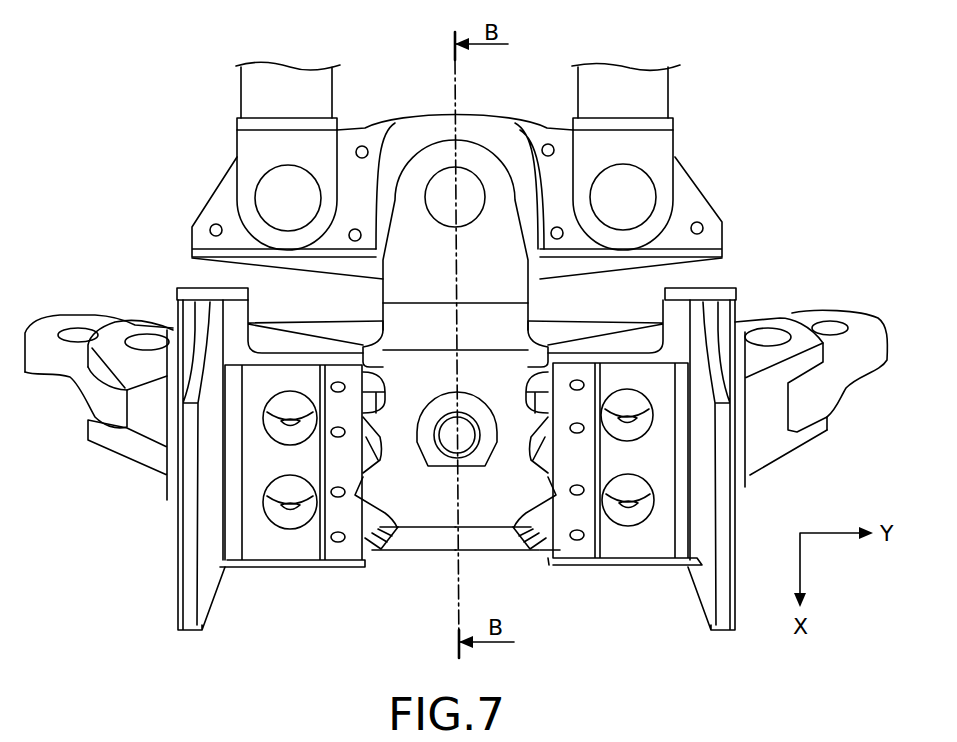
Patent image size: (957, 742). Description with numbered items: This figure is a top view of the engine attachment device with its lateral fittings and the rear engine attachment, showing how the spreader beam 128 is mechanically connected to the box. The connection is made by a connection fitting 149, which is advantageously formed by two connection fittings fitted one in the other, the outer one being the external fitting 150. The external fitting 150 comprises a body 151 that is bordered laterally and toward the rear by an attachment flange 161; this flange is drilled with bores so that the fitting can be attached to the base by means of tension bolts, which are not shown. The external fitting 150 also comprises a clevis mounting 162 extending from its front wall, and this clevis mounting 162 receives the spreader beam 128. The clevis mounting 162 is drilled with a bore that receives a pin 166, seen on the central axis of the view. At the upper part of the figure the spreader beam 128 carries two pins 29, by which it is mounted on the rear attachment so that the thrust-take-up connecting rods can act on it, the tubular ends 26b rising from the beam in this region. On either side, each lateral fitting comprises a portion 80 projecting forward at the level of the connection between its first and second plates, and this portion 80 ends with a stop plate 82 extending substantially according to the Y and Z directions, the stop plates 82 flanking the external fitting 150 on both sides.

The tube 26b is at (241, 99).
The pins 29 is at (272, 192).
The portion 80 is at (100, 262).
The stop plate 82 is at (217, 292).
The spreader beam 128 is at (740, 212).
The connection fitting 149 is at (322, 295).
The external fitting 150 is at (413, 572).
The body 151 is at (476, 495).
The attachment flange 161 is at (550, 527).
The clevis mounting 162 is at (531, 283).
The pin 166 is at (465, 178).